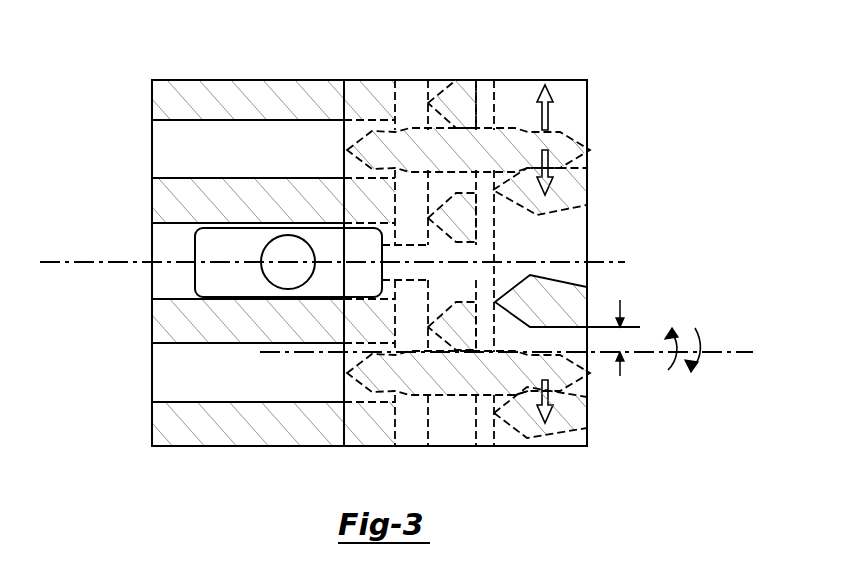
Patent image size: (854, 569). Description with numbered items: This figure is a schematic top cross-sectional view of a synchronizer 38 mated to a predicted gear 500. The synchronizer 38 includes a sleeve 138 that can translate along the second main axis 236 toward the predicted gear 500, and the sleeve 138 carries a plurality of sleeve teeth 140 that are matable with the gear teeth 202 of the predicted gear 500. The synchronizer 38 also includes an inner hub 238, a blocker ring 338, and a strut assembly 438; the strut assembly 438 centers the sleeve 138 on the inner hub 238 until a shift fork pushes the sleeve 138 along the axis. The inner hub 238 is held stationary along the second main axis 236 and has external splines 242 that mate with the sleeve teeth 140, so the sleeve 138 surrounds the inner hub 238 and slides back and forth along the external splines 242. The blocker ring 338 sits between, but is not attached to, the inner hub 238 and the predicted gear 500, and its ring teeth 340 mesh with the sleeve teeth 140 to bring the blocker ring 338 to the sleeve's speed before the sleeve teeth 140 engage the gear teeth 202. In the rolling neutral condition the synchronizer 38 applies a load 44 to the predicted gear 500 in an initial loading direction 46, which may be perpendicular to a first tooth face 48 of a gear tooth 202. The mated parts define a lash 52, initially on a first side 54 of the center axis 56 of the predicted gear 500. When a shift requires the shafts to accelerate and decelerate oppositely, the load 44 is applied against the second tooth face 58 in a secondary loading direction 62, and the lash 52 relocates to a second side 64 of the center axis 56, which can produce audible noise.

The synchronizer 38 is at (130, 36).
The sleeve 138 is at (412, 79).
The ring teeth 340 is at (464, 77).
The secondary loading direction 62 is at (549, 88).
The predicted gear 500 is at (575, 104).
The sleeve teeth 140 is at (346, 150).
The load 44 is at (566, 158).
The gear teeth 202 is at (578, 190).
The initial loading direction 46 is at (528, 180).
The second tooth face 58 is at (574, 326).
The lash 52 is at (619, 338).
The second side 64 is at (689, 340).
The first side 54 is at (666, 360).
The center axis 56 is at (733, 352).
The first tooth face 48 is at (530, 380).
The blocker ring 338 is at (455, 433).
The external splines 242 is at (228, 432).
The inner hub 238 is at (165, 378).
The strut assembly 438 is at (165, 245).
The second main axis 236 is at (62, 260).